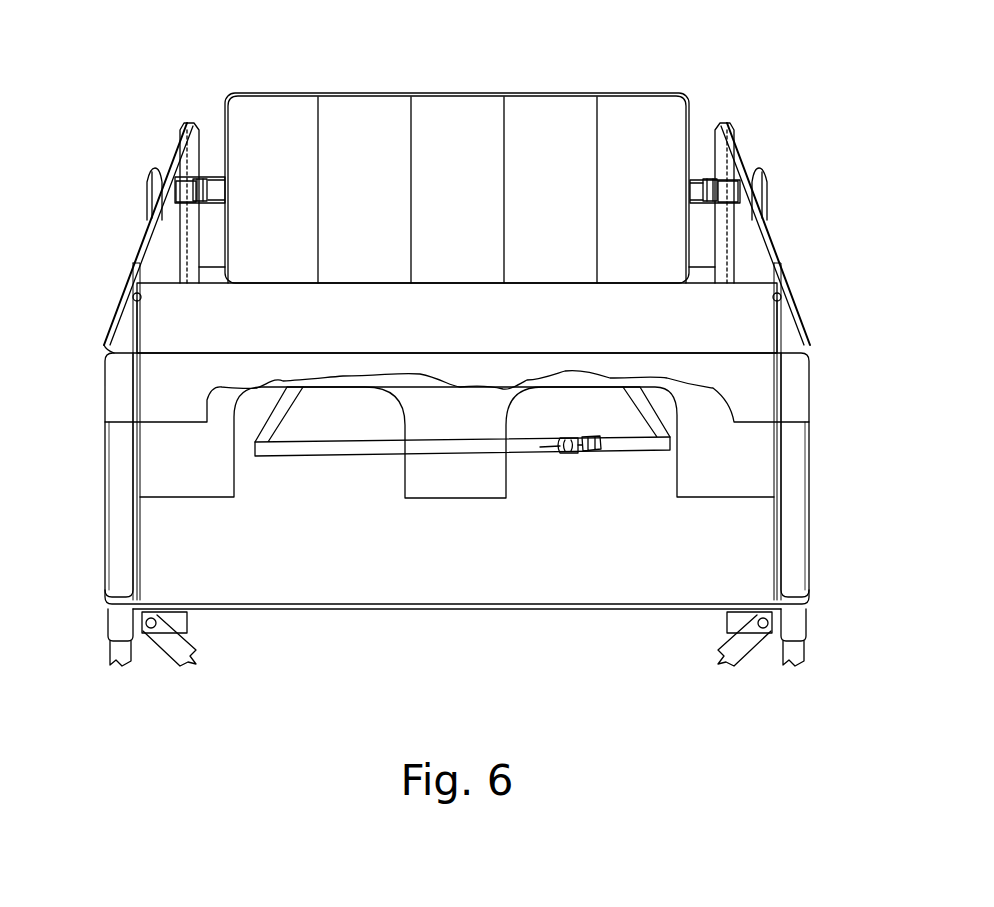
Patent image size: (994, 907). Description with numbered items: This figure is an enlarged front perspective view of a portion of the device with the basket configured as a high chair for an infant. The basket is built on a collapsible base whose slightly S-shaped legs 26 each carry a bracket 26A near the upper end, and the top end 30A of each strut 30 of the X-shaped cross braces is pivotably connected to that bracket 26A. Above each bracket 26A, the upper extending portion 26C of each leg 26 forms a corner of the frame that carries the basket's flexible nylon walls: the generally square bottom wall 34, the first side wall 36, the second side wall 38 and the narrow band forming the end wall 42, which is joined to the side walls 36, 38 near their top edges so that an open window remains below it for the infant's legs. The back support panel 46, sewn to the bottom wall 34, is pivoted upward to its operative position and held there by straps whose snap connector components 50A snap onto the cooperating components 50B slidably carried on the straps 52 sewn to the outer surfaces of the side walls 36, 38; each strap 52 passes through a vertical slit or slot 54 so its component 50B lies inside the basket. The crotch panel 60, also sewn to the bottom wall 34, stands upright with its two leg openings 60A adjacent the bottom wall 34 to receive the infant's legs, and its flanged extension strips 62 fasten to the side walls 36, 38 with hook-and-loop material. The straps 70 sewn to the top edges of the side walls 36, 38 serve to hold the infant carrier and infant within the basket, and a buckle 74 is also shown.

The leg 26 is at (117, 651).
The bracket 26A is at (118, 622).
The upper extending portion 26C is at (122, 518).
The strut 30 is at (192, 672).
The top end of strut 30A is at (200, 653).
The bottom wall 34 is at (418, 583).
The first side wall 36 is at (807, 333).
The second side wall 38 is at (106, 334).
The second end wall 42 is at (742, 380).
The back support panel 46 is at (556, 113).
The snap connector component 50A is at (222, 178).
The cooperating snap connector component 50B is at (203, 185).
The strap 52 is at (190, 133).
The slit or slot 54 is at (185, 190).
The crotch panel 60 is at (458, 312).
The leg opening 60A is at (333, 417).
The flanged extension strip 62 is at (140, 290).
The strap 70 is at (147, 205).
The buckle 74 is at (628, 450).